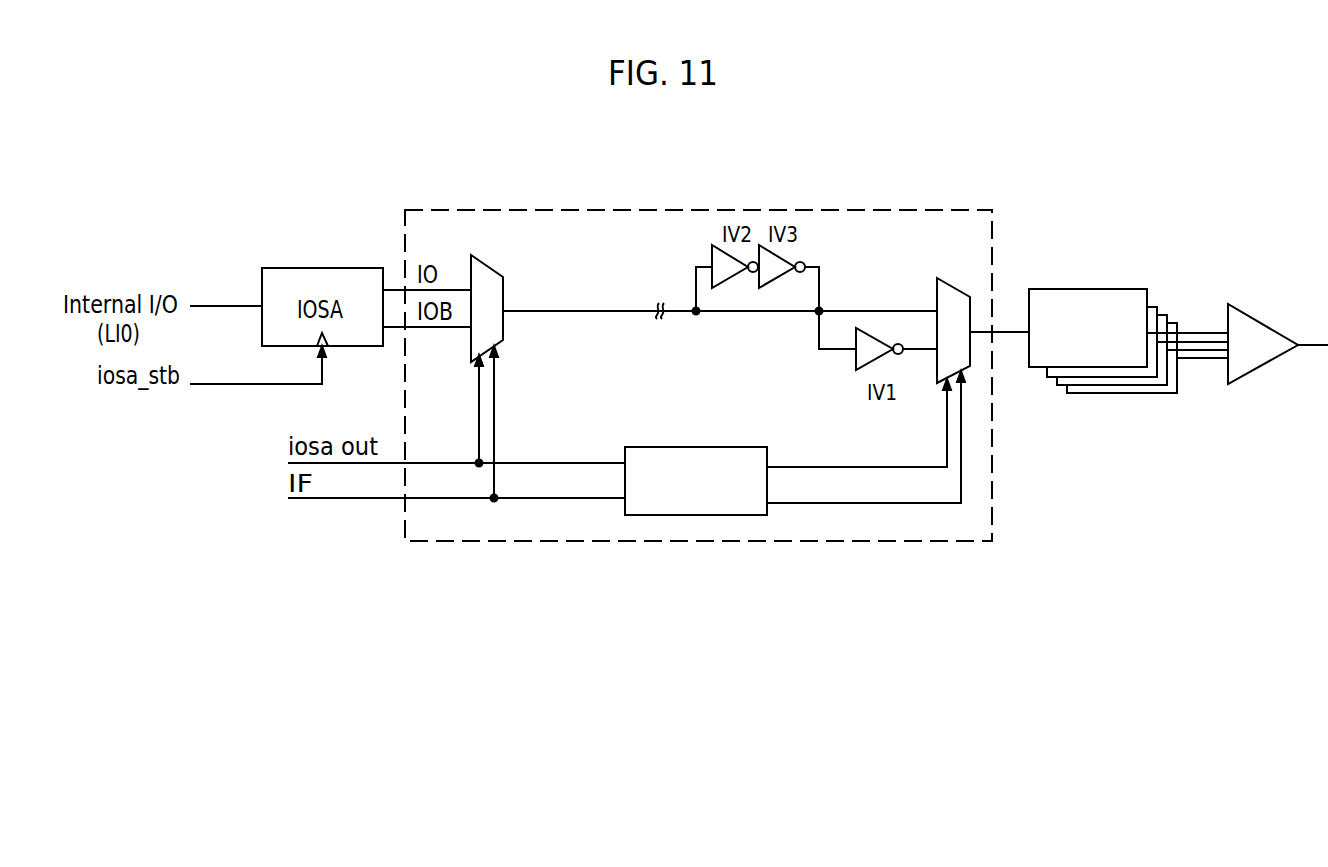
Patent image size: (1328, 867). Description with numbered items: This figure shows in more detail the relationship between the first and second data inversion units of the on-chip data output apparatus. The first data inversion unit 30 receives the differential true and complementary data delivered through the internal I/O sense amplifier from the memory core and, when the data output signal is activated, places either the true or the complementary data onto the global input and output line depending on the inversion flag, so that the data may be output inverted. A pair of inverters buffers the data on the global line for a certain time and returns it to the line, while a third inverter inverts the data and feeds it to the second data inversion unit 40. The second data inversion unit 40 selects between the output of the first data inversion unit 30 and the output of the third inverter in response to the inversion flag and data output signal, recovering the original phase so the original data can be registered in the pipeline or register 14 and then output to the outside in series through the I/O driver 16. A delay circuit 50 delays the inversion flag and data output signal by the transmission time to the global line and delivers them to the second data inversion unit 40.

The pipeline or register 14 is at (1087, 289).
The I/O driver 16 is at (1258, 325).
The first data inversion unit 30 is at (495, 268).
The second data inversion unit 40 is at (957, 288).
The delay circuit 50 is at (693, 447).